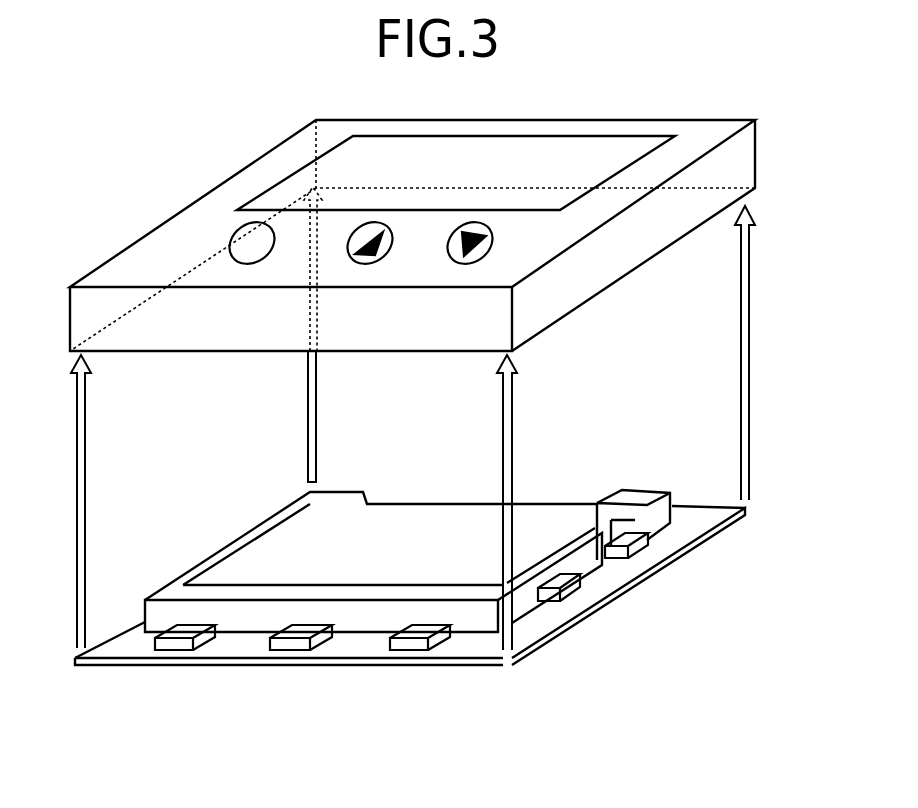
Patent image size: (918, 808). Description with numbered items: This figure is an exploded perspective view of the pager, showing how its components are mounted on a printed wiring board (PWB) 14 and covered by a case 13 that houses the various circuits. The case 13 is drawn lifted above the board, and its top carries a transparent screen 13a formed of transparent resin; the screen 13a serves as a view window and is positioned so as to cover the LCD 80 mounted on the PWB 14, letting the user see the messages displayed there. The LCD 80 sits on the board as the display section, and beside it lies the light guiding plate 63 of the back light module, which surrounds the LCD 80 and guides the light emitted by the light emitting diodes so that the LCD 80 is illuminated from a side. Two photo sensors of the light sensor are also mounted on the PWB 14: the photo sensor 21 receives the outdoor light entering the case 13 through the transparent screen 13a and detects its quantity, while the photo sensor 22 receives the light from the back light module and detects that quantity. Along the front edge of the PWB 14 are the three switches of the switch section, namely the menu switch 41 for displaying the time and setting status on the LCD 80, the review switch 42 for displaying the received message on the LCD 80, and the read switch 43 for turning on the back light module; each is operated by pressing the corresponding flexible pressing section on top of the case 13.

The case 13 is at (757, 164).
The transparent screen 13a is at (617, 135).
The LCD 80 is at (392, 502).
The light guiding plate 63 is at (632, 487).
The printed wiring board 14 is at (747, 512).
The photo sensor 21 is at (640, 547).
The photo sensor 22 is at (576, 600).
The menu switch 41 is at (178, 650).
The review switch 42 is at (293, 650).
The read switch 43 is at (406, 650).